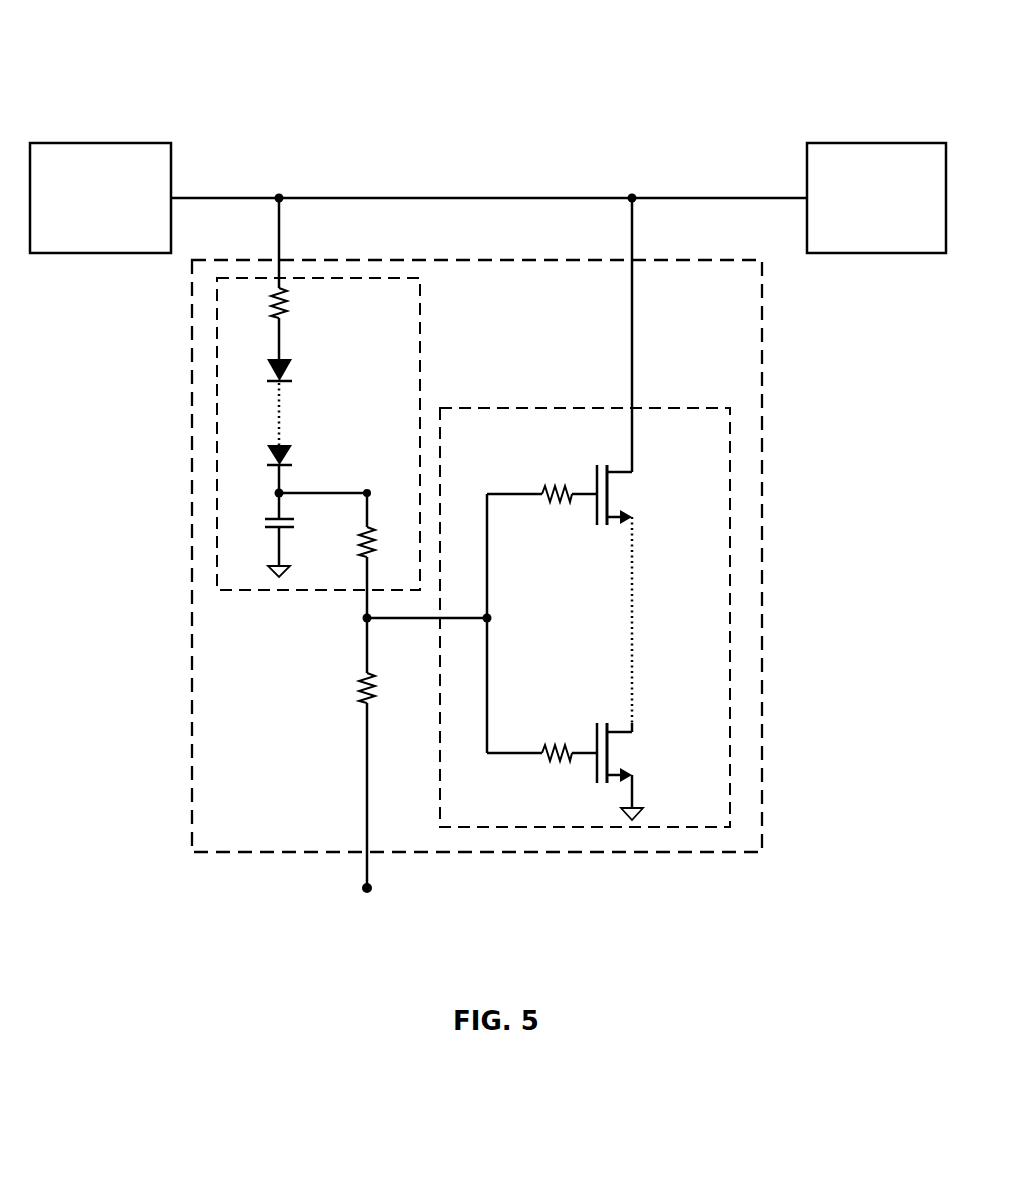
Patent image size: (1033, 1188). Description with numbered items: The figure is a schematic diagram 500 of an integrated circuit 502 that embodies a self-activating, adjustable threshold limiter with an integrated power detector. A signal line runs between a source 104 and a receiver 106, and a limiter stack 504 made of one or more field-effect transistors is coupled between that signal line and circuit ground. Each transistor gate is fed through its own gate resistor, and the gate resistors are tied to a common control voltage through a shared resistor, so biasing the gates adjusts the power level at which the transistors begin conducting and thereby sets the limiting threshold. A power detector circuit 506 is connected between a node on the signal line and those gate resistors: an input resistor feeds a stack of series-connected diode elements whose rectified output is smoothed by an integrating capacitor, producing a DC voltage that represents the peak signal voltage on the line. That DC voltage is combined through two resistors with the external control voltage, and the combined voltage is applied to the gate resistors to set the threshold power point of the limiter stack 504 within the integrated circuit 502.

The schematic diagram 500 is at (85, 28).
The source 104 is at (100, 143).
The receiver 106 is at (875, 143).
The integrated circuit 502 is at (763, 393).
The limiter stack 504 is at (473, 408).
The power detector circuit 506 is at (420, 298).